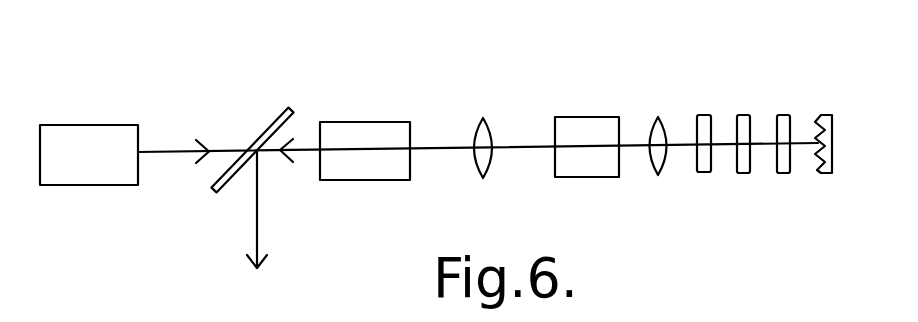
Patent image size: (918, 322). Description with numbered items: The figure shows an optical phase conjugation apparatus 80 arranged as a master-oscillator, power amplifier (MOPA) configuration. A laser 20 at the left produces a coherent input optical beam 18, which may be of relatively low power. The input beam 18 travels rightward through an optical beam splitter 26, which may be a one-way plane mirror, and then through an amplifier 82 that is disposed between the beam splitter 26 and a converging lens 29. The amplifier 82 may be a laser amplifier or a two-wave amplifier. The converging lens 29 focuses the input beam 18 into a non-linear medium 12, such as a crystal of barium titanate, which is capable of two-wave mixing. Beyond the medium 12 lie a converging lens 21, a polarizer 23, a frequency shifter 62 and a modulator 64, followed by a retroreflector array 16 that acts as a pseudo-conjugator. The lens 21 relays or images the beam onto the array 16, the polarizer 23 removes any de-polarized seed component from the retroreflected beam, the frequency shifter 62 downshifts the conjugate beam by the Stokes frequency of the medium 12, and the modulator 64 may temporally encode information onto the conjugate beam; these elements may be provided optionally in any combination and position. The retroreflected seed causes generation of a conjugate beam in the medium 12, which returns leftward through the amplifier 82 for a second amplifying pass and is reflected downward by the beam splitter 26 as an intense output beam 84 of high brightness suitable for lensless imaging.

The non-linear medium 12 is at (582, 117).
The retroreflector array 16 is at (826, 113).
The input optical beam 18 is at (168, 152).
The laser 20 is at (90, 124).
The converging lens 21 is at (661, 124).
The polarizer 23 is at (700, 173).
The optical beam splitter 26 is at (283, 110).
The converging lens 29 is at (483, 120).
The frequency shifter 62 is at (741, 114).
The modulator 64 is at (783, 173).
The apparatus 80 is at (332, 62).
The amplifier 82 is at (370, 122).
The output beam 84 is at (258, 228).